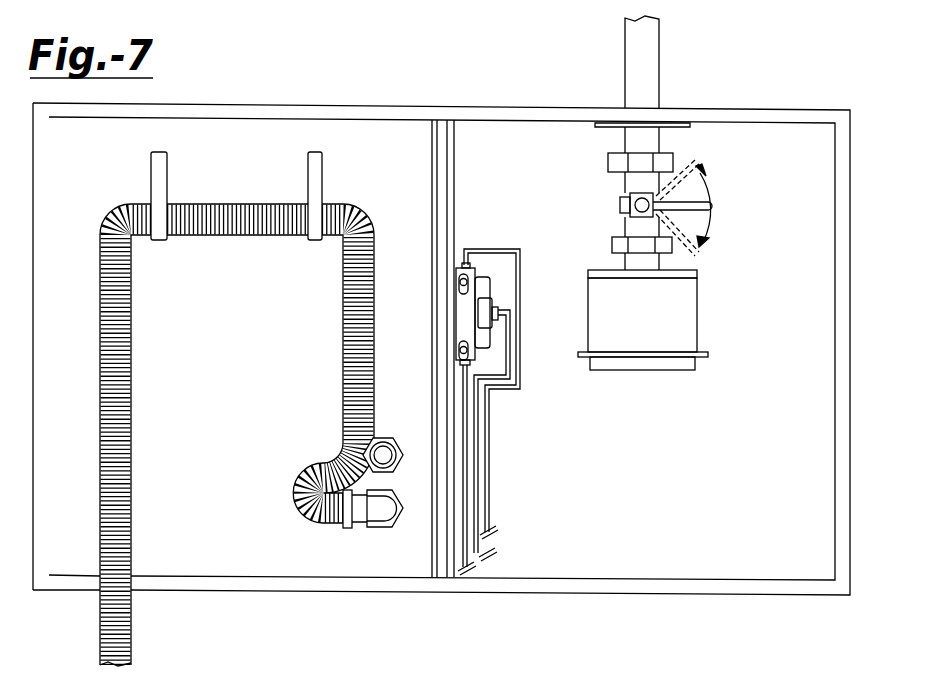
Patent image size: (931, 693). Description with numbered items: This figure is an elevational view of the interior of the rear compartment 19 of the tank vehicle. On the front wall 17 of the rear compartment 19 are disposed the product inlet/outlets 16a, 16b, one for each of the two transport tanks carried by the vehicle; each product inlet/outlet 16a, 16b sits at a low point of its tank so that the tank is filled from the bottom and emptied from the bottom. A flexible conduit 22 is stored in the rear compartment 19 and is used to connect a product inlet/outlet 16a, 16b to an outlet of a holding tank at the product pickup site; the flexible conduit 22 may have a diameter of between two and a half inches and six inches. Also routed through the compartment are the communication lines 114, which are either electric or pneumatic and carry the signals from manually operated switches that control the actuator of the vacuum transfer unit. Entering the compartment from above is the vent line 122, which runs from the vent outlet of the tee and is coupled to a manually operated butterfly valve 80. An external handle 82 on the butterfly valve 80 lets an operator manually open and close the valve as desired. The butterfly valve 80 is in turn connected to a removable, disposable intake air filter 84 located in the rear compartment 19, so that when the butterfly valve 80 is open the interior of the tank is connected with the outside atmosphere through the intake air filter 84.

The front wall 17 is at (235, 338).
The rear compartment 19 is at (727, 108).
The flexible conduit 22 is at (211, 204).
The product inlet/outlet 16a is at (385, 438).
The product inlet/outlet 16b is at (373, 528).
The communication lines 114 is at (466, 432).
The vent line 122 is at (624, 45).
The butterfly valve 80 is at (625, 227).
The external handle 82 is at (713, 206).
The intake air filter 84 is at (698, 306).